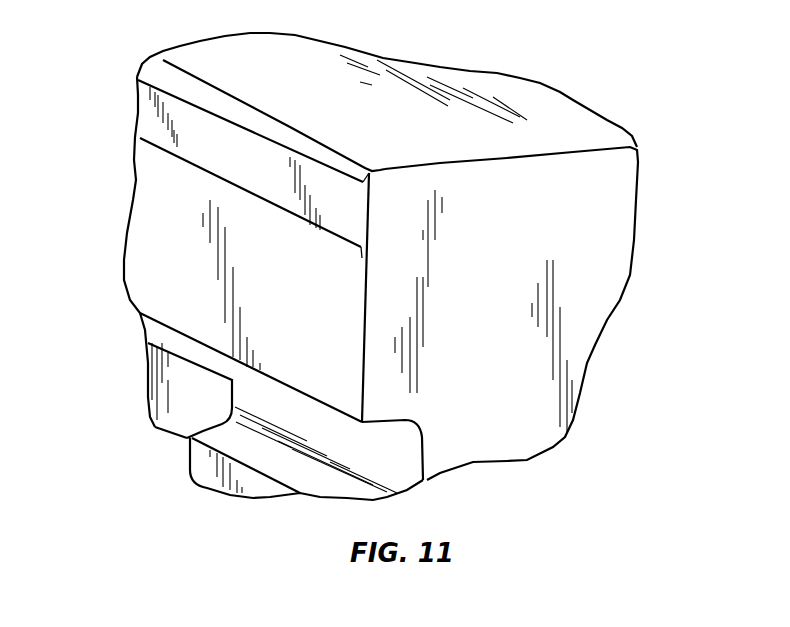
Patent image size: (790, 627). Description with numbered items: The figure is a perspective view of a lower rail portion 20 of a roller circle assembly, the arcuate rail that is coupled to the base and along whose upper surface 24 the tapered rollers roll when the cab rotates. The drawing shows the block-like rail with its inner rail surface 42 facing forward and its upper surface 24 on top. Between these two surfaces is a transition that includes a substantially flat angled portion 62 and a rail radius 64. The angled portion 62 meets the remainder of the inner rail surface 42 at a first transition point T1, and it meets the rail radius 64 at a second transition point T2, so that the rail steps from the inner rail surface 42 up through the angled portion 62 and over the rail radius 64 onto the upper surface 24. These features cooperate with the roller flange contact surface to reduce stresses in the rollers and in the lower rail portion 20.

The lower rail portion 20 is at (593, 230).
The upper surface 24 is at (419, 140).
The inner rail surface 42 is at (154, 234).
The angled portion 62 is at (141, 111).
The rail radius 64 is at (289, 130).
The first transition point T1 is at (363, 253).
The second transition point T2 is at (368, 190).